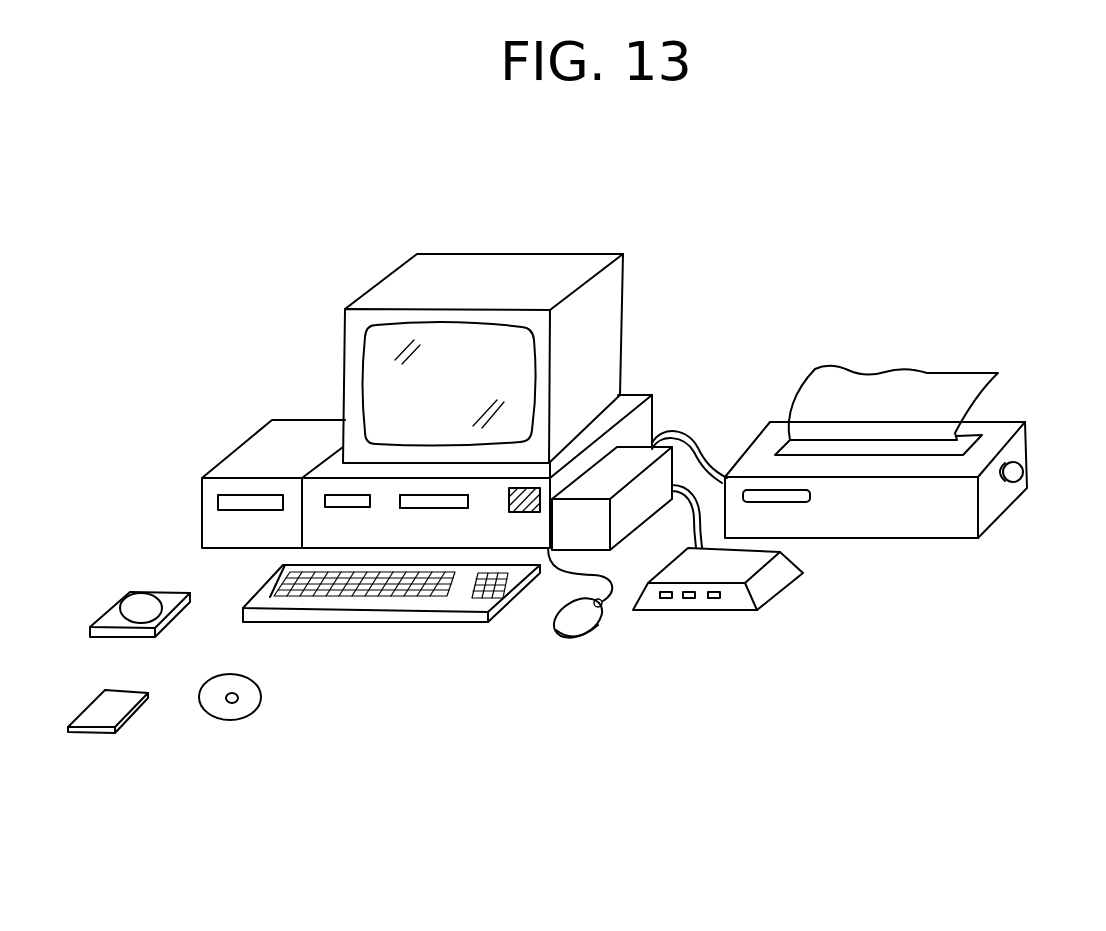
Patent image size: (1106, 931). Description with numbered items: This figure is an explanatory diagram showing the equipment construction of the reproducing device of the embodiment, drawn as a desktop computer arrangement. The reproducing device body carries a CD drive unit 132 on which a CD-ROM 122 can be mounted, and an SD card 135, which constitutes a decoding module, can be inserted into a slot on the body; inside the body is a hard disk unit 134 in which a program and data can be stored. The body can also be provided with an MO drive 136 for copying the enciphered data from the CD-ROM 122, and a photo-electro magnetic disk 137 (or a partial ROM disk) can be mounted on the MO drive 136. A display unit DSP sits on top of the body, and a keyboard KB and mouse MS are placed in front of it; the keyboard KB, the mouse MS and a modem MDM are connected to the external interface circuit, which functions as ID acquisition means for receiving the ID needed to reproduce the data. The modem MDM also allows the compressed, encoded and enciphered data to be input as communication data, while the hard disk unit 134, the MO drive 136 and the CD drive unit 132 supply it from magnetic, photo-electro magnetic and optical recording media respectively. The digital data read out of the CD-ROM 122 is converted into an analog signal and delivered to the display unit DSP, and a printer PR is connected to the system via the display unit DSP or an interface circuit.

The MO drive 136 is at (253, 457).
The hard disk unit 134 is at (632, 462).
The photo-electro magnetic disk 137 is at (254, 511).
The SD card 135 is at (336, 508).
The CD-ROM 122 is at (430, 510).
The CD drive unit 132 is at (452, 507).
The display unit DSP is at (463, 337).
The printer PR is at (1000, 433).
The keyboard KB is at (460, 618).
The mouse MS is at (578, 632).
The modem MDM is at (772, 588).